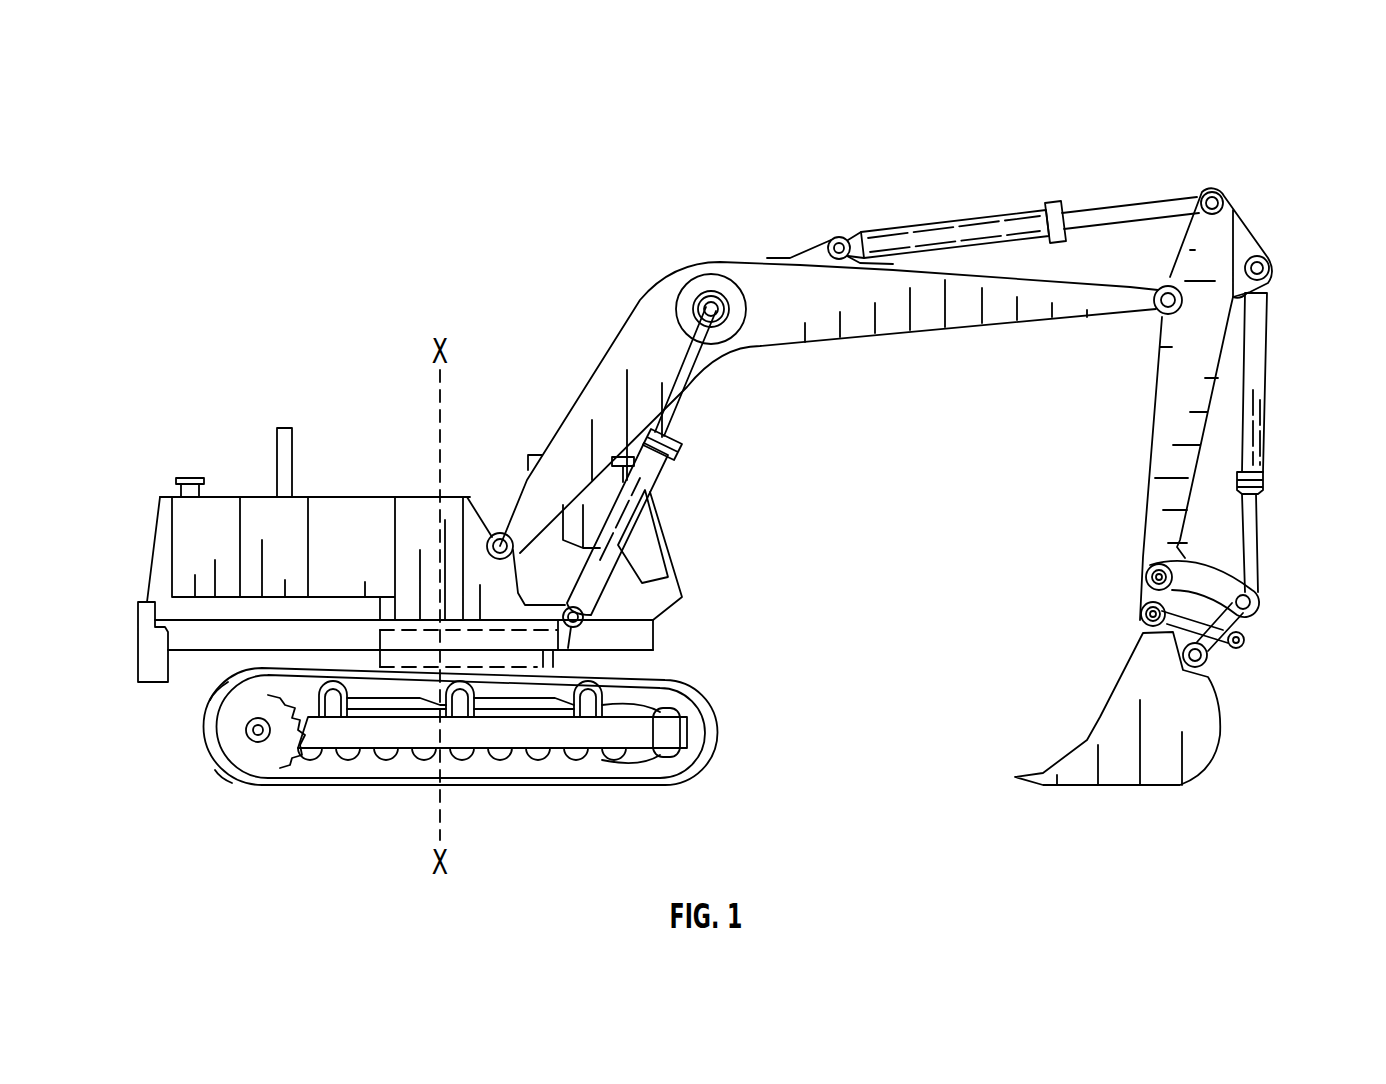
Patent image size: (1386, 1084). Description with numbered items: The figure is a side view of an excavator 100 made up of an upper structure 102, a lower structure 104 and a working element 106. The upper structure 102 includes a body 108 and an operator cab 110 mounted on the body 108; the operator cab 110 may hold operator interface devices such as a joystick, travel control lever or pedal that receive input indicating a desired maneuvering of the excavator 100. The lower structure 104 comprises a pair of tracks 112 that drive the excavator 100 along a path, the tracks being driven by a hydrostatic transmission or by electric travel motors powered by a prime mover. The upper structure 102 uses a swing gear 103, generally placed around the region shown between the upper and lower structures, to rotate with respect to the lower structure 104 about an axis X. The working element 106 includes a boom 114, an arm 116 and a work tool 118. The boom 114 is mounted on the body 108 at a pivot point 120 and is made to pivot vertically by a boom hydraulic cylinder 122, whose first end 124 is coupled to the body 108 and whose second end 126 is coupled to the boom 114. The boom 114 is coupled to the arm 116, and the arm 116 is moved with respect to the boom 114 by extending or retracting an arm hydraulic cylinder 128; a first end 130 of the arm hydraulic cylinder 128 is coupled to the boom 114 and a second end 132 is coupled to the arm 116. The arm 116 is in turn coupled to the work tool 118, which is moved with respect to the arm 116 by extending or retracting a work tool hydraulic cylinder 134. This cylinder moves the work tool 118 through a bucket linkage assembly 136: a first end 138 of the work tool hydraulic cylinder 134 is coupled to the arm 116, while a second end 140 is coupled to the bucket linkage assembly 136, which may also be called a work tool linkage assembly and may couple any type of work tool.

The excavator 100 is at (294, 155).
The upper structure 102 is at (122, 488).
The swing gear 103 is at (476, 652).
The lower structure 104 is at (122, 687).
The working element 106 is at (1243, 123).
The body 108 is at (350, 497).
The operator cab 110 is at (672, 540).
The pair of tracks 112 is at (223, 770).
The boom 114 is at (933, 345).
The arm 116 is at (1147, 453).
The work tool 118 is at (1105, 710).
The pivot point 120 is at (497, 532).
The boom hydraulic cylinder 122 is at (668, 455).
The first end of the boom hydraulic cylinder 124 is at (583, 606).
The second end of the boom hydraulic cylinder 126 is at (720, 320).
The arm hydraulic cylinder 128 is at (990, 220).
The first end of the arm hydraulic cylinder 130 is at (830, 240).
The second end of the arm hydraulic cylinder 132 is at (1222, 197).
The work tool hydraulic cylinder 134 is at (1270, 410).
The bucket linkage assembly 136 is at (1244, 625).
The first end of the work tool hydraulic cylinder 138 is at (1270, 285).
The second end of the work tool hydraulic cylinder 140 is at (1248, 555).